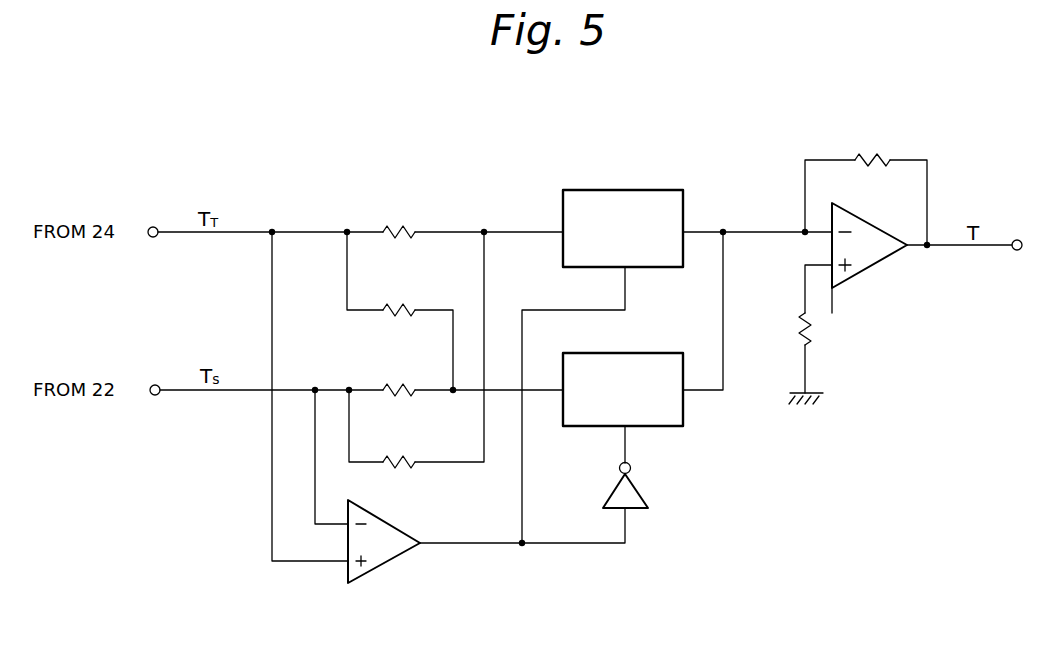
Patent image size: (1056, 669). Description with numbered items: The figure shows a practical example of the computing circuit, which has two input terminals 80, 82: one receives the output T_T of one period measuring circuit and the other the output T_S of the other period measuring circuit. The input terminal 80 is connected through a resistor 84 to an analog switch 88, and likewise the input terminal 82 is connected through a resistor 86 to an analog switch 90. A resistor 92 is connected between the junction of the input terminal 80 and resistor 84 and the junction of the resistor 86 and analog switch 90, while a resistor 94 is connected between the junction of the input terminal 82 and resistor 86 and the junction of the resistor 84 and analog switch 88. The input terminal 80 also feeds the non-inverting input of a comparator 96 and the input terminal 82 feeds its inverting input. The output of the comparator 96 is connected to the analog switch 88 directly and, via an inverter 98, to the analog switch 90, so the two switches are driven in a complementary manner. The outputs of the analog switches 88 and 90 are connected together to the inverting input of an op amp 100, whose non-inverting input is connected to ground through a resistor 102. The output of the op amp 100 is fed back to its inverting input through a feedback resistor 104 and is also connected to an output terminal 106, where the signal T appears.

The input terminal 80 is at (153, 237).
The input terminal 82 is at (155, 395).
The resistor 84 is at (399, 226).
The resistor 86 is at (399, 384).
The analog switch 88 is at (660, 189).
The analog switch 90 is at (646, 352).
The resistor 92 is at (398, 304).
The resistor 94 is at (404, 456).
The comparator 96 is at (383, 519).
The inverter 98 is at (640, 493).
The op amp 100 is at (868, 268).
The resistor 102 is at (811, 330).
The feedback resistor 104 is at (874, 157).
The output terminal 106 is at (1017, 250).